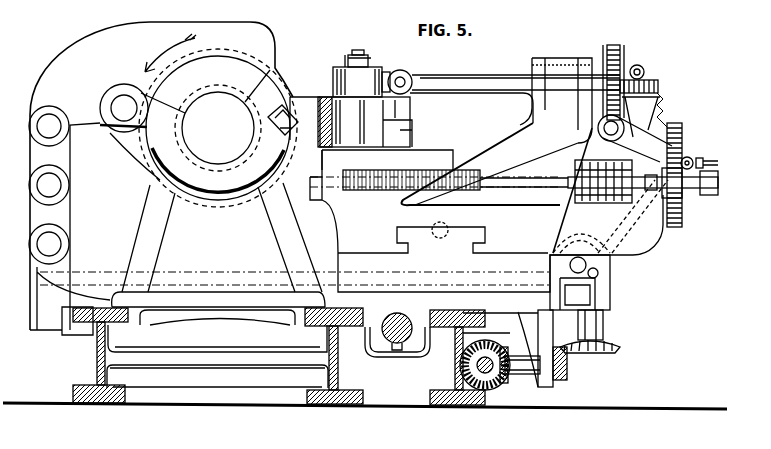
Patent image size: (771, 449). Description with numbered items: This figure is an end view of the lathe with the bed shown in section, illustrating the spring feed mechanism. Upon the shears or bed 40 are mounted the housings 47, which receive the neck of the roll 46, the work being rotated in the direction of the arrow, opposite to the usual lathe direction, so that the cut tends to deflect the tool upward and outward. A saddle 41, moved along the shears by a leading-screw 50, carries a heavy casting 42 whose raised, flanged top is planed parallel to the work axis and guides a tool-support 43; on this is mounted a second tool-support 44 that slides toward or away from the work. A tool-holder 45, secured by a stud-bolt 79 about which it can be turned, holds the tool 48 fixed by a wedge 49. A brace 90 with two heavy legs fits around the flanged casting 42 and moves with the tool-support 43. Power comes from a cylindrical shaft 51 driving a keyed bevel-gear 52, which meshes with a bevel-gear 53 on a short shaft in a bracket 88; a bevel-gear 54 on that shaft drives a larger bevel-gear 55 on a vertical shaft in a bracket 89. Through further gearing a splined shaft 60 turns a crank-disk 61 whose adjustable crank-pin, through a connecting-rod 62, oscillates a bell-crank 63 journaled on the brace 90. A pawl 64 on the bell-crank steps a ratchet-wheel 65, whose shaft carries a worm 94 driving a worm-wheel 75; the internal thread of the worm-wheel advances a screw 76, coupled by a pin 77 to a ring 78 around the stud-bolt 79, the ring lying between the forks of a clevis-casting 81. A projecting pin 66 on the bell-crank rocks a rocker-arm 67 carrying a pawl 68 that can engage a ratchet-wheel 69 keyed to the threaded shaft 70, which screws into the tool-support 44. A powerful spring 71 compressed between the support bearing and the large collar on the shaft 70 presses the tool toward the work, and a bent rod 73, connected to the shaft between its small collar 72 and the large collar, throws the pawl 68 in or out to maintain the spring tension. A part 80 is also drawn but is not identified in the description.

The shears or bed 40 is at (84, 405).
The saddle 41 is at (275, 340).
The heavy casting 42 is at (500, 243).
The tool-support 43 is at (460, 173).
The tool-support 44 is at (387, 160).
The tool-holder 45 is at (351, 122).
The roll 46 is at (218, 128).
The housings 47 is at (175, 176).
The tool 48 is at (254, 118).
The wedge 49 is at (290, 124).
The leading-screw 50 is at (404, 362).
The cylindrical shaft 51 is at (460, 362).
The bevel-gear 52 is at (503, 384).
The bevel-gear 53 is at (528, 378).
The bevel-gear 54 is at (568, 375).
The bevel-gear 55 is at (622, 350).
The shaft 60 is at (609, 245).
The crank-disk 61 is at (597, 283).
The connecting-rod 62 is at (688, 157).
The bell-crank 63 is at (637, 140).
The pawl 64 is at (638, 65).
The ratchet-wheel 65 is at (641, 117).
The projecting pin 66 is at (718, 163).
The rocker-arm 67 is at (703, 161).
The pawl 68 is at (684, 200).
The ratchet-wheel 69 is at (676, 124).
The shaft 70 is at (726, 182).
The spring 71 is at (603, 205).
The small collar 72 is at (490, 164).
The rod 73 is at (710, 195).
The worm-wheel 75 is at (613, 75).
The screw 76 is at (482, 74).
The pin 77 is at (402, 70).
The ring 78 is at (357, 82).
The stud-bolt 79 is at (358, 52).
The screw 80 is at (346, 58).
The clevis-casting 81 is at (325, 100).
The bracket 88 is at (508, 348).
The bracket 89 is at (603, 326).
The brace 90 is at (500, 236).
The worm 94 is at (624, 128).